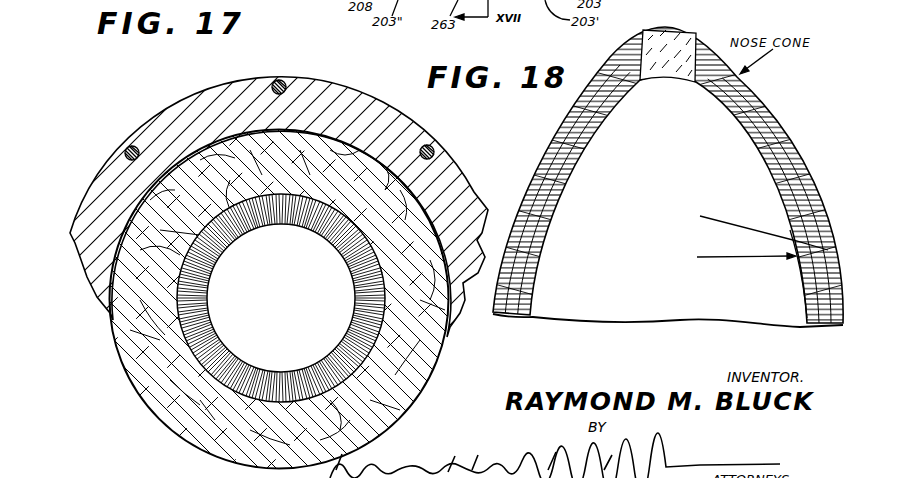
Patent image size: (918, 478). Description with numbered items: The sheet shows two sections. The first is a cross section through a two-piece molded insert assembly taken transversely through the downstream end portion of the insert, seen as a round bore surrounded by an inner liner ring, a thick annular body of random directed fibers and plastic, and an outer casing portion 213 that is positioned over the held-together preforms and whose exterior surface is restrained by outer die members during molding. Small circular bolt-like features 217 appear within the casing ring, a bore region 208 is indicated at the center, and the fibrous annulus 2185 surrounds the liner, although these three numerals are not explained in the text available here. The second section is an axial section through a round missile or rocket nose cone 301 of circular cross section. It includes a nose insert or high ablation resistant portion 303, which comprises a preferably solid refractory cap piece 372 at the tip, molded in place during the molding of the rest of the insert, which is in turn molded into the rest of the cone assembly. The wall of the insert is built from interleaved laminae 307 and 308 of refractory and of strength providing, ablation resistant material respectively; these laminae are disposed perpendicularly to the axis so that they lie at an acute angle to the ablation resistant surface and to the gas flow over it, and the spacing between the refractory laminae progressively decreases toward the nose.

In FIG. 17, the bolt 217 is at (140, 147).
In FIG. 17, the outer casing portion 213 is at (238, 78).
In FIG. 17, the bore 208 is at (294, 226).
In FIG. 17, the fibrous insulation layer 2185 is at (432, 379).
In FIG. 18, the refractory cap piece 372 is at (694, 33).
In FIG. 18, the nose insert 303 is at (556, 133).
In FIG. 18, the laminae of ablation resistant material 308 is at (812, 193).
In FIG. 18, the laminae of refractory material 307 is at (813, 250).
In FIG. 18, the nose cone 301 is at (492, 305).